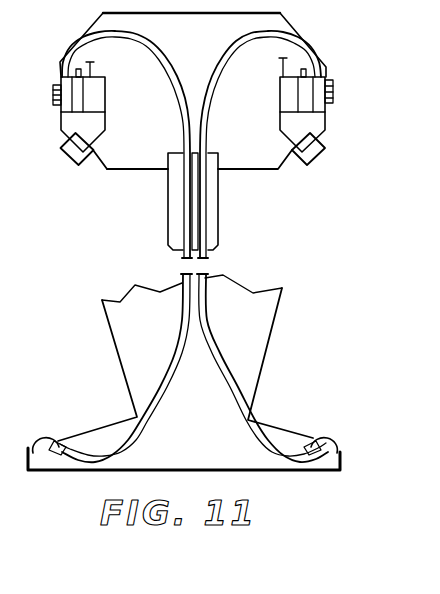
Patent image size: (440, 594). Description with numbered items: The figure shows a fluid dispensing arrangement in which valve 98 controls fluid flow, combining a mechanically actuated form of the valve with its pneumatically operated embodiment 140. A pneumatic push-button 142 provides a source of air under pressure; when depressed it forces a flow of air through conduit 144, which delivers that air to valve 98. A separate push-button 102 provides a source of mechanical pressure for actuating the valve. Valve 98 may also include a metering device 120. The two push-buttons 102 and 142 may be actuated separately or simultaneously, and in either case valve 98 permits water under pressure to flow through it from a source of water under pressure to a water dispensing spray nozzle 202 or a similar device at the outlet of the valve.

The valve 98 is at (105, 97).
The push-button 102 is at (53, 97).
The metering device 120 is at (96, 63).
The embodiment of valve 140 is at (78, 113).
The pneumatic push-button 142 is at (43, 433).
The conduit 144 is at (206, 76).
The water dispensing spray nozzle 202 is at (63, 165).